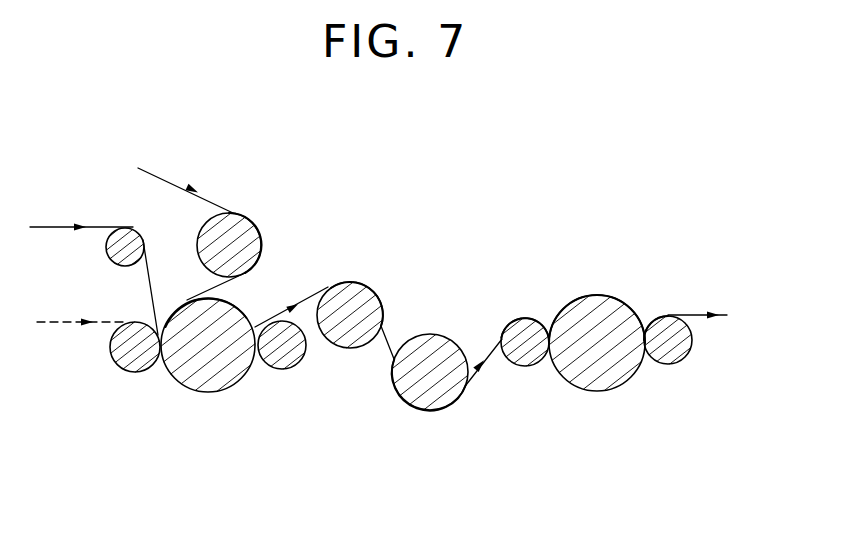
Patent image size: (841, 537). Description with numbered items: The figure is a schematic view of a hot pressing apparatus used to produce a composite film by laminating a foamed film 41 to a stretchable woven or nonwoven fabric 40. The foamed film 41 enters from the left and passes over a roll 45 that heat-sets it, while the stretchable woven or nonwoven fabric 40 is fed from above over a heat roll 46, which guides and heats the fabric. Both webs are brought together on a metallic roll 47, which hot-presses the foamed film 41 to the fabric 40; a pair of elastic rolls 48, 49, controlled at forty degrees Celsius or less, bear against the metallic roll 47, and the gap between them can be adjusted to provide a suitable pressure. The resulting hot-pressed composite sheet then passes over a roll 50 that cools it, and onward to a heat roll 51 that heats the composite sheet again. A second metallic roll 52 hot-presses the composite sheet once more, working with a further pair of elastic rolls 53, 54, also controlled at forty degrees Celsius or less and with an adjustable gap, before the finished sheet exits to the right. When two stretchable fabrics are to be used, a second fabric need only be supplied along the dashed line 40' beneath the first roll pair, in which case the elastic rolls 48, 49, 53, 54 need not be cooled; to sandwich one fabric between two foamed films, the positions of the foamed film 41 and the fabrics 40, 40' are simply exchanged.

The stretchable woven or nonwoven fabric 40 is at (432, 270).
The line for supplying another stretchable woven or nonwoven fabric 40' is at (80, 351).
The foamed film 41 is at (60, 225).
The roll 45 is at (112, 260).
The heat roll 46 is at (247, 245).
The metallic roll 47 is at (200, 370).
The elastic roll 48 is at (130, 357).
The elastic roll 49 is at (277, 357).
The roll 50 is at (363, 297).
The heat roll 51 is at (423, 395).
The metallic roll 52 is at (602, 393).
The elastic roll 53 is at (520, 328).
The elastic roll 54 is at (662, 328).